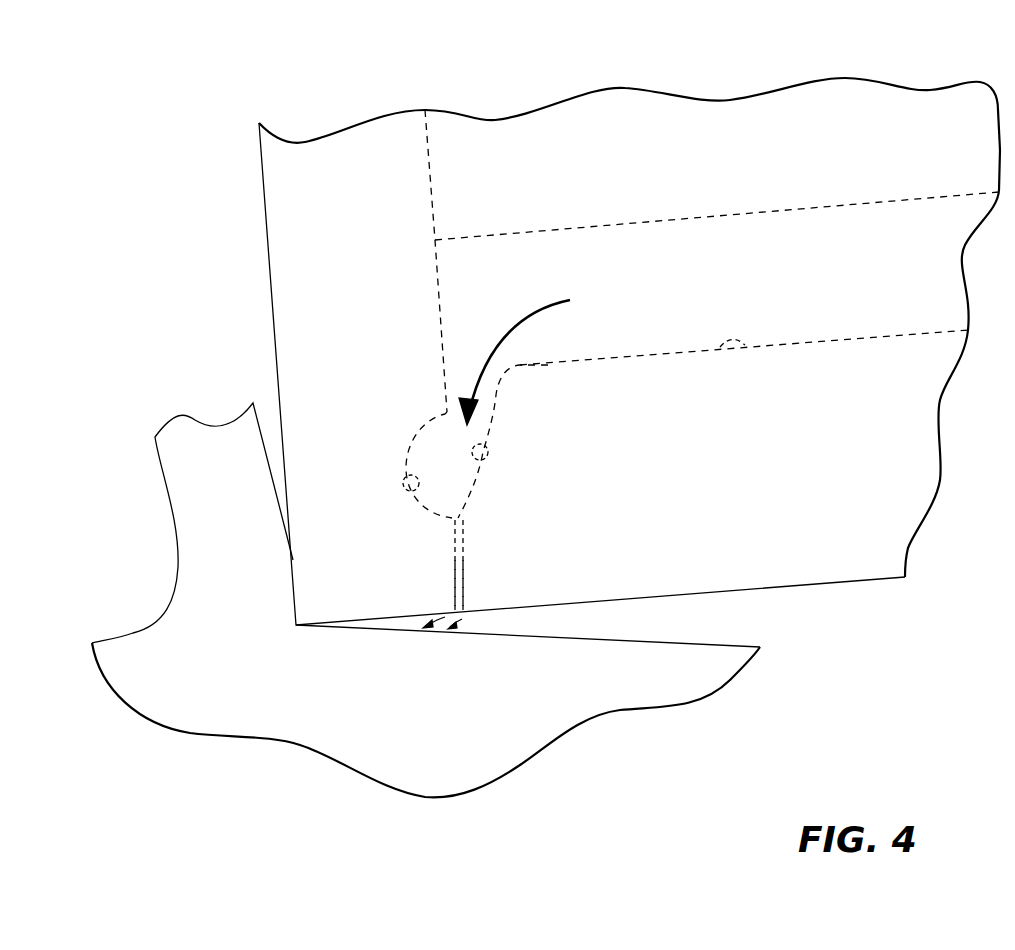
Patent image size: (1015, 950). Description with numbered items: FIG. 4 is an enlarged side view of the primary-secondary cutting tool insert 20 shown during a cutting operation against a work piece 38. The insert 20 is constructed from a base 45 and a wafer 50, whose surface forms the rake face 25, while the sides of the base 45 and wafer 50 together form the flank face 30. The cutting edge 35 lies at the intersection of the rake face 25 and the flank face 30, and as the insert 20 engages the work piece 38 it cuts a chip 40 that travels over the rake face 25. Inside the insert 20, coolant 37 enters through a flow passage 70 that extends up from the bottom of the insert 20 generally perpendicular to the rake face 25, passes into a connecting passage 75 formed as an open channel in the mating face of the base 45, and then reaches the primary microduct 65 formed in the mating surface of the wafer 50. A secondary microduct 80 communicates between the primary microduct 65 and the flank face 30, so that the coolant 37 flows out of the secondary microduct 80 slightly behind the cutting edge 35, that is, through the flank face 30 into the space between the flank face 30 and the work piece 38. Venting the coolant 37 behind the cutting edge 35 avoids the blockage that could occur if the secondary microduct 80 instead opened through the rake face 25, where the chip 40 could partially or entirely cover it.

The cutting tool insert 20 is at (862, 632).
The rake face 25 is at (263, 215).
The flank face 30 is at (697, 593).
The cutting edge 35 is at (296, 628).
The coolant 37 is at (513, 314).
The work piece 38 is at (170, 690).
The chip 40 is at (188, 435).
The base 45 is at (655, 108).
The wafer 50 is at (307, 332).
The primary microduct 65 is at (404, 490).
The flow passage 70 is at (745, 347).
The connecting passage 75 is at (488, 458).
The secondary microduct 80 is at (465, 583).